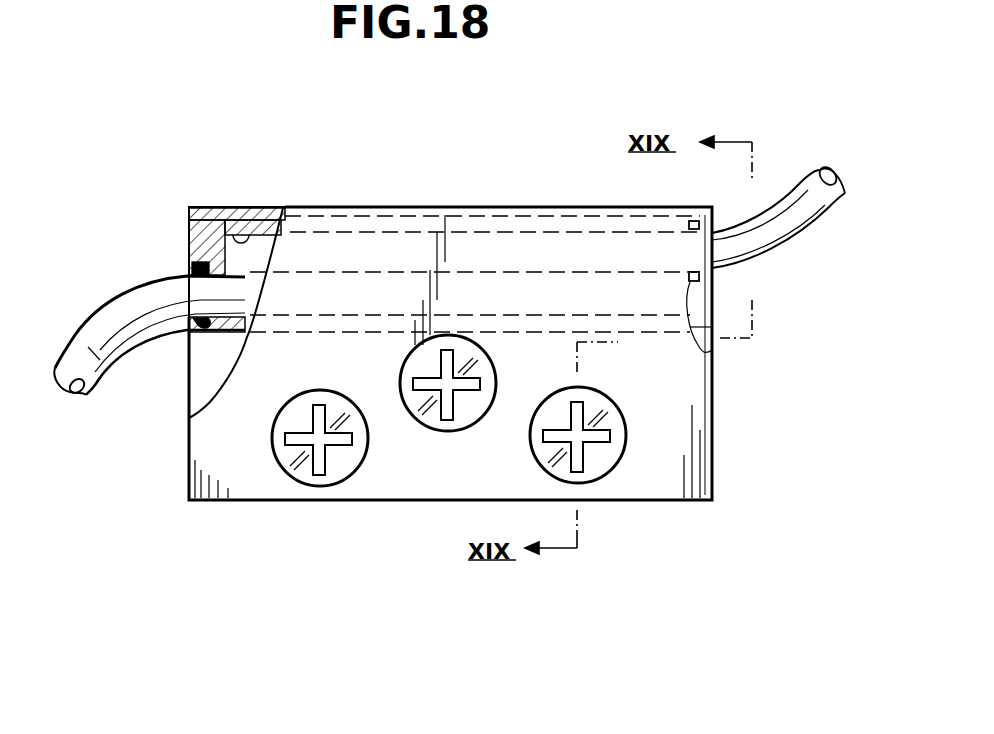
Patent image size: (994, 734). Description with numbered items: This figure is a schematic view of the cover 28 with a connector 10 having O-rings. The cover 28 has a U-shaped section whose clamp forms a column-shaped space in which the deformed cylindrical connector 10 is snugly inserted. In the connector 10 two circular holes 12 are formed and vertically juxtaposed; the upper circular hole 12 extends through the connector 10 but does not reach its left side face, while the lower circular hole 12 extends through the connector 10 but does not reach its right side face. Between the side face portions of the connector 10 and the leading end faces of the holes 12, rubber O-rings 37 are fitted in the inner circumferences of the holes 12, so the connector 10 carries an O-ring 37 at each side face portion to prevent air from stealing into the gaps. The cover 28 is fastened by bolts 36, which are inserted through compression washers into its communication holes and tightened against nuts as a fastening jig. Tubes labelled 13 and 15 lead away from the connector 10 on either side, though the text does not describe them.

The connector 10 is at (189, 218).
The circular hole 12 is at (243, 238).
The outlet tube 13 is at (780, 235).
The inlet tube 15 is at (107, 360).
The cover 28 is at (680, 455).
The bolt 36 is at (305, 470).
The O-ring 37 is at (192, 266).